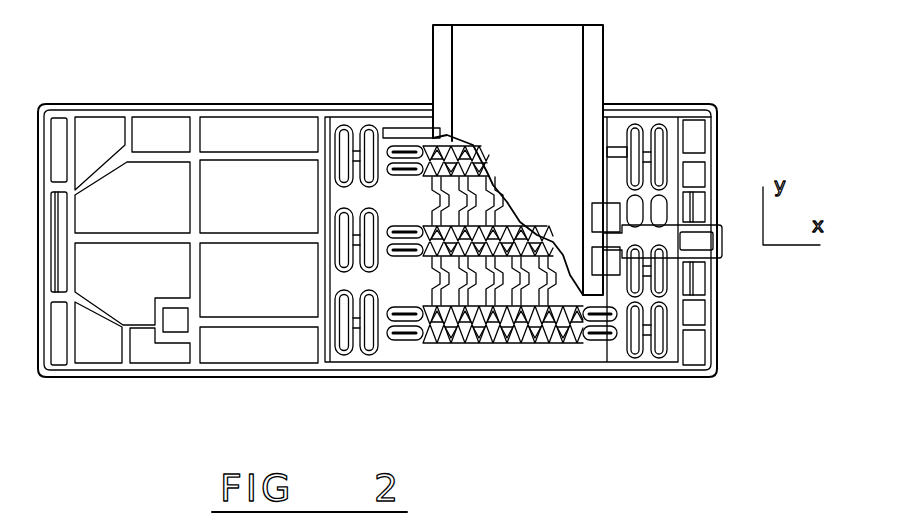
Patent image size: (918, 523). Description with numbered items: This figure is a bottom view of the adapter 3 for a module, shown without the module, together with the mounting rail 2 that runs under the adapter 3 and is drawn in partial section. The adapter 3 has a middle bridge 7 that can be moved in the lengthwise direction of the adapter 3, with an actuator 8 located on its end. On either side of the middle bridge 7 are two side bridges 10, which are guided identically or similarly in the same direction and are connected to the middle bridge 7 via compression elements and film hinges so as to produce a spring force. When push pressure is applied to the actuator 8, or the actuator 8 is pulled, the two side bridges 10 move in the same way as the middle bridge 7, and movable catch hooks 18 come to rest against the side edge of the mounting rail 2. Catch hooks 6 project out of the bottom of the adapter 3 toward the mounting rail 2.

The mounting rail 2 is at (603, 58).
The adapter 3 is at (717, 313).
The catch hooks 6 is at (607, 212).
The middle bridge 7 is at (443, 238).
The actuator 8 is at (722, 246).
The side bridges 10 is at (430, 156).
The movable catch hooks 18 is at (402, 150).